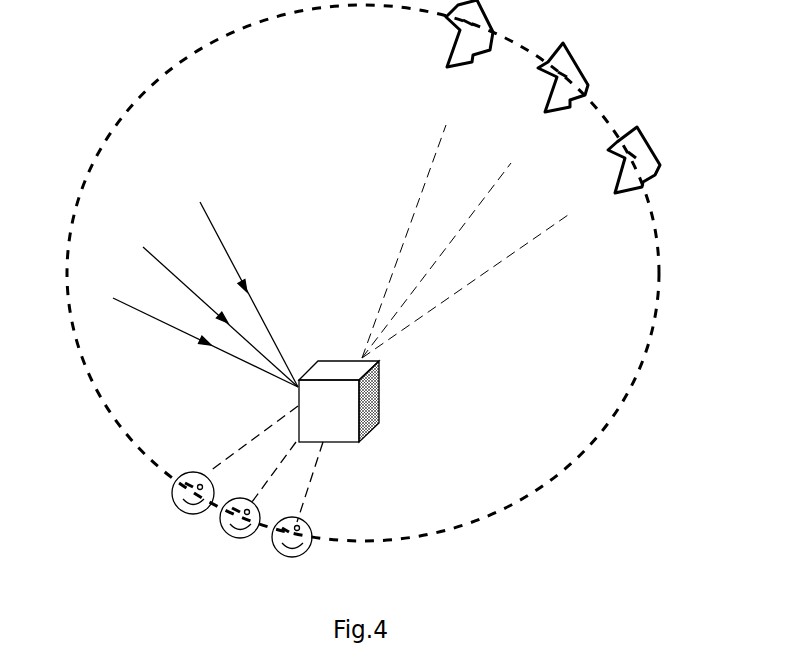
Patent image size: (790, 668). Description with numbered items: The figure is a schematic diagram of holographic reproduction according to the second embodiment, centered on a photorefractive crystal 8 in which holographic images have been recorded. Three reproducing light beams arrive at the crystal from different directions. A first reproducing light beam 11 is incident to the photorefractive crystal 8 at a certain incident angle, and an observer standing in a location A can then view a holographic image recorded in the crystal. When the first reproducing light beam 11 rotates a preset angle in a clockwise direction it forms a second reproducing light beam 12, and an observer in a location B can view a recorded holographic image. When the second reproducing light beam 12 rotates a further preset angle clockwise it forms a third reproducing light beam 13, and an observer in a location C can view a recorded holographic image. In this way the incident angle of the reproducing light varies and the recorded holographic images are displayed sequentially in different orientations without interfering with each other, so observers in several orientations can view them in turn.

The photorefractive crystal 8 is at (380, 401).
The first reproducing light beam 11 is at (194, 338).
The second reproducing light beam 12 is at (208, 311).
The third reproducing light beam 13 is at (239, 288).
The location A is at (294, 545).
The location B is at (240, 529).
The location C is at (186, 499).